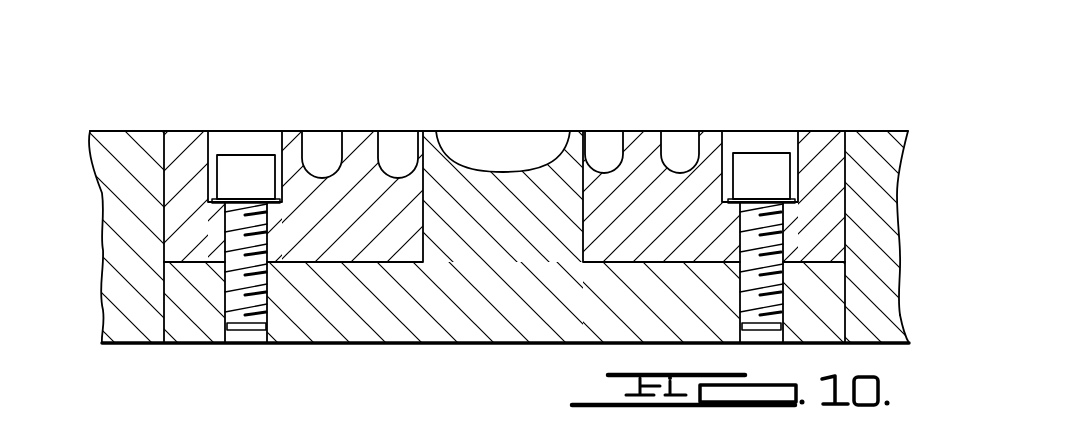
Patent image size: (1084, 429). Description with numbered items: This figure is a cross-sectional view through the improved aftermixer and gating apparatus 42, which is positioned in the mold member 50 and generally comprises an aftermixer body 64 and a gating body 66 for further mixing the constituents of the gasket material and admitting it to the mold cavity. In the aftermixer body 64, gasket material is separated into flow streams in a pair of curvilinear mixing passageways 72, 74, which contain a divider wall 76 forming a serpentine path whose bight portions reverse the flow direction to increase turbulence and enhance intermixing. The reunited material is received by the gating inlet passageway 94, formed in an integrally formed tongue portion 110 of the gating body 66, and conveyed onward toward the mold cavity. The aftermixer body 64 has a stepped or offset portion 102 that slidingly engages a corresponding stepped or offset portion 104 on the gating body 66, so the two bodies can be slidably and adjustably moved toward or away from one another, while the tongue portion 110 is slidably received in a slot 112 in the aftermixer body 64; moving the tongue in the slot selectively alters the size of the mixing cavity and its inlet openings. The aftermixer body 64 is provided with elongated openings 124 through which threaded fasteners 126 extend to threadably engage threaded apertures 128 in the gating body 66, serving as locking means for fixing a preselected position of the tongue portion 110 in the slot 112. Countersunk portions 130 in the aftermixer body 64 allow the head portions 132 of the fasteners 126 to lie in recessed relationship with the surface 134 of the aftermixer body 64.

The aftermixer and gating apparatus 42 is at (848, 90).
The mold member 50 is at (118, 144).
The aftermixer body 64 is at (179, 144).
The gating body 66 is at (398, 328).
The curvilinear mixing passageway 72 is at (323, 148).
The curvilinear mixing passageway 74 is at (603, 143).
The divider wall 76 is at (362, 150).
The gating inlet passageway 94 is at (493, 143).
The stepped or offset portion 102 is at (833, 249).
The stepped or offset portion 104 is at (833, 297).
The tongue portion 110 is at (500, 234).
The slot 112 is at (575, 208).
The elongated opening 124 is at (265, 222).
The threaded fastener 126 is at (227, 233).
The threaded aperture 128 is at (262, 293).
The countersunk portion 130 is at (208, 137).
The head portion 132 is at (245, 162).
The surface 134 is at (832, 128).